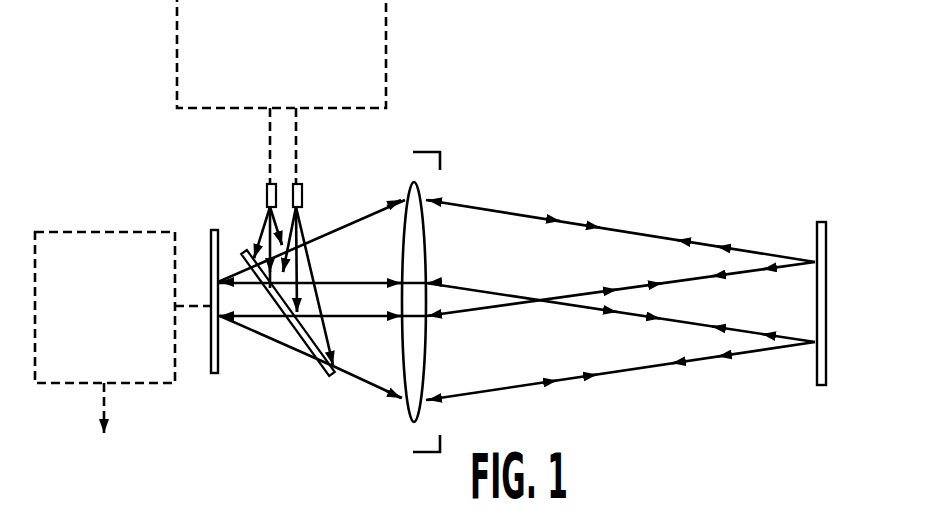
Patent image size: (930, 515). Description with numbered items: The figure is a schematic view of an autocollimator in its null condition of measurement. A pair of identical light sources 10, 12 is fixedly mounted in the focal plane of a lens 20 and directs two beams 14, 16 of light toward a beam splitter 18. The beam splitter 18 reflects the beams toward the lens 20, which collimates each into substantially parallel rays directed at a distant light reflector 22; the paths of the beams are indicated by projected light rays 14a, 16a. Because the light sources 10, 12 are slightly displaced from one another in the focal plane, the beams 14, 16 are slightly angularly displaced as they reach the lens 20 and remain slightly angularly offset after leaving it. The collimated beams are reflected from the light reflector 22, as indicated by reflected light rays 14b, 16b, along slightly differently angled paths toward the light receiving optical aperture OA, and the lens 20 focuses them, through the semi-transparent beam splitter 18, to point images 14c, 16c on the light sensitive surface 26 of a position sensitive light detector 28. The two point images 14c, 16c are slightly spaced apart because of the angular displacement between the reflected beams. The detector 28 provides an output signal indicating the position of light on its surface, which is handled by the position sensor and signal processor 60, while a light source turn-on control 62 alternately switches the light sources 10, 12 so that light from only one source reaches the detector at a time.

The light source 10 is at (271, 184).
The light source 12 is at (297, 184).
The light beam 14 is at (254, 250).
The light beam 16 is at (303, 253).
The projected light ray 14a is at (590, 224).
The reflected light ray 14b is at (741, 272).
The point image 14c is at (225, 322).
The projected light ray 16a is at (640, 285).
The reflected light ray 16b is at (697, 243).
The point image 16c is at (232, 274).
The beam splitter 18 is at (325, 372).
The lens 20 is at (411, 414).
The light reflector 22 is at (817, 242).
The light sensitive surface 26 is at (219, 370).
The position sensitive light detector 28 is at (207, 315).
The position sensor and signal processor 60 is at (93, 232).
The light source turn-on control for alternately switching 62 is at (177, 70).
The light receiving optical aperture OA is at (430, 152).